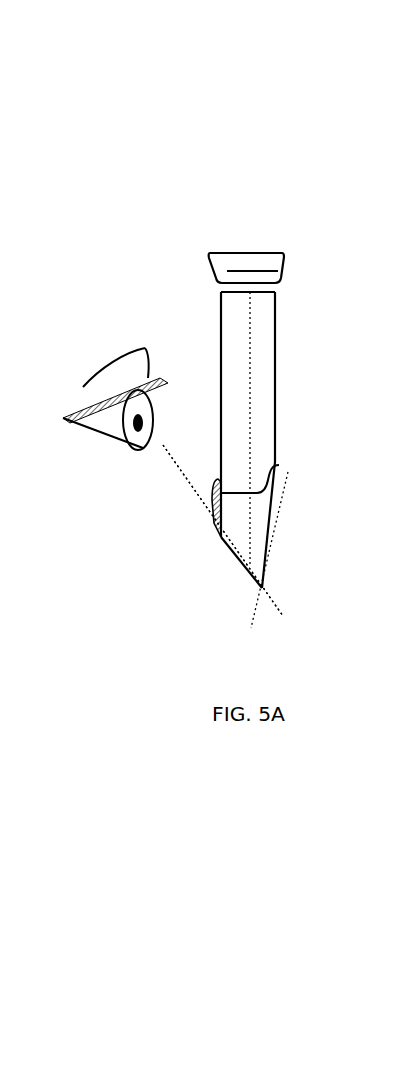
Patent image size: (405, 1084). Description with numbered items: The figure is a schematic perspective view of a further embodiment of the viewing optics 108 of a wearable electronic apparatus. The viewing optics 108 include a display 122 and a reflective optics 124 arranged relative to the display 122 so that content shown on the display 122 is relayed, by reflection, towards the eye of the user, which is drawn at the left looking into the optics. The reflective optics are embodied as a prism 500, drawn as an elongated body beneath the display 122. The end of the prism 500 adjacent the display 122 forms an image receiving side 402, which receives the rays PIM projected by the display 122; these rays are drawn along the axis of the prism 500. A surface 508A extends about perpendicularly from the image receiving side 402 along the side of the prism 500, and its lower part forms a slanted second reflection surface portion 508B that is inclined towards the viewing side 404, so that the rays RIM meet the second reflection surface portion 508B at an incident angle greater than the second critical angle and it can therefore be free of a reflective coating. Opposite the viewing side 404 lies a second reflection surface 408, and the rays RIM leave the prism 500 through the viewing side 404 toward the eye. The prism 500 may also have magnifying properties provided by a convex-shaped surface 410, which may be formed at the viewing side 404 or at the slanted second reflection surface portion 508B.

The viewing optics 108 is at (265, 232).
The display 122 is at (219, 257).
The image receiving side 402 is at (277, 291).
The rays projected by screen PIM is at (252, 360).
The prism 500 is at (282, 403).
The surface 508A is at (276, 458).
The convex-shaped surface 410 is at (279, 465).
The second reflection surface portion 508B is at (273, 549).
The second reflection surface 408 is at (231, 557).
The viewing side 404 is at (206, 508).
The reflective optics 124 is at (193, 495).
The rays RIM is at (196, 474).